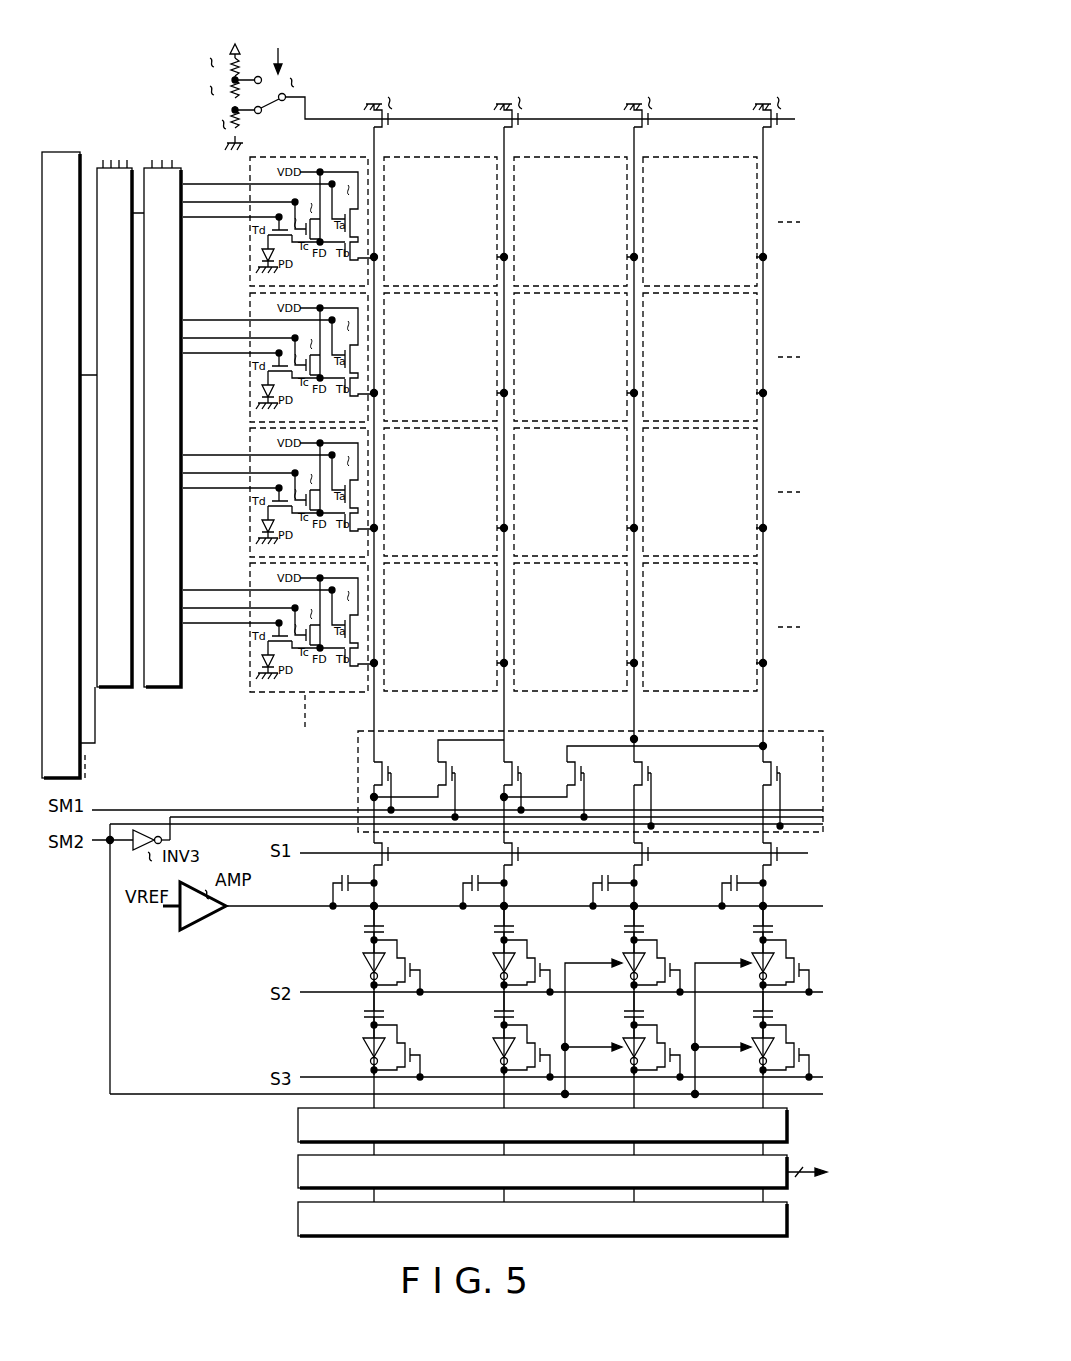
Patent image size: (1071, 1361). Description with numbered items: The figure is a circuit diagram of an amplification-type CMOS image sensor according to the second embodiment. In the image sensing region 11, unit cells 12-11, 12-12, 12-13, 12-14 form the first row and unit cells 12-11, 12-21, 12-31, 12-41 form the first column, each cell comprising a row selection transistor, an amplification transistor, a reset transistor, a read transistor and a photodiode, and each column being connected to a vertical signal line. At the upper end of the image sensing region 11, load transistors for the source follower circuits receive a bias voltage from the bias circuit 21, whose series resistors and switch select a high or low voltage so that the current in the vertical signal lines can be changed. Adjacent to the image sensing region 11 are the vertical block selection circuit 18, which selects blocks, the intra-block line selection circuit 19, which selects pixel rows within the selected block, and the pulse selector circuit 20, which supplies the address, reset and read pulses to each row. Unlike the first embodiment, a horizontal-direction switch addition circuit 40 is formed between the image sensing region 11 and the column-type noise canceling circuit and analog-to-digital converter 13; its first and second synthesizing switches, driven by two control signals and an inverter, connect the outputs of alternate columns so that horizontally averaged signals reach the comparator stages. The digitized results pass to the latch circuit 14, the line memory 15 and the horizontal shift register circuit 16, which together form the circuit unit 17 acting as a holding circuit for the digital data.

The image sensing region 11 is at (826, 139).
The unit cell 12-11 is at (278, 160).
The unit cell 12-12 is at (405, 160).
The unit cell 12-13 is at (533, 160).
The unit cell 12-14 is at (663, 160).
The unit cell 12-21 is at (248, 402).
The unit cell 12-31 is at (248, 537).
The unit cell 12-41 is at (248, 672).
The column-type noise canceling circuit and analog-to-digital converter (CDS & ADC) 13 is at (298, 850).
The latch circuit 14 is at (297, 1129).
The line memory 15 is at (297, 1176).
The horizontal shift register circuit 16 is at (297, 1222).
The circuit unit 17 is at (186, 1128).
The vertical block selection circuit 18 is at (66, 152).
The intra-block line selection circuit 19 is at (113, 690).
The pulse selector circuit 20 is at (160, 700).
The bias circuit 21 is at (165, 32).
The horizontal-direction switch addition circuit 40 is at (358, 746).